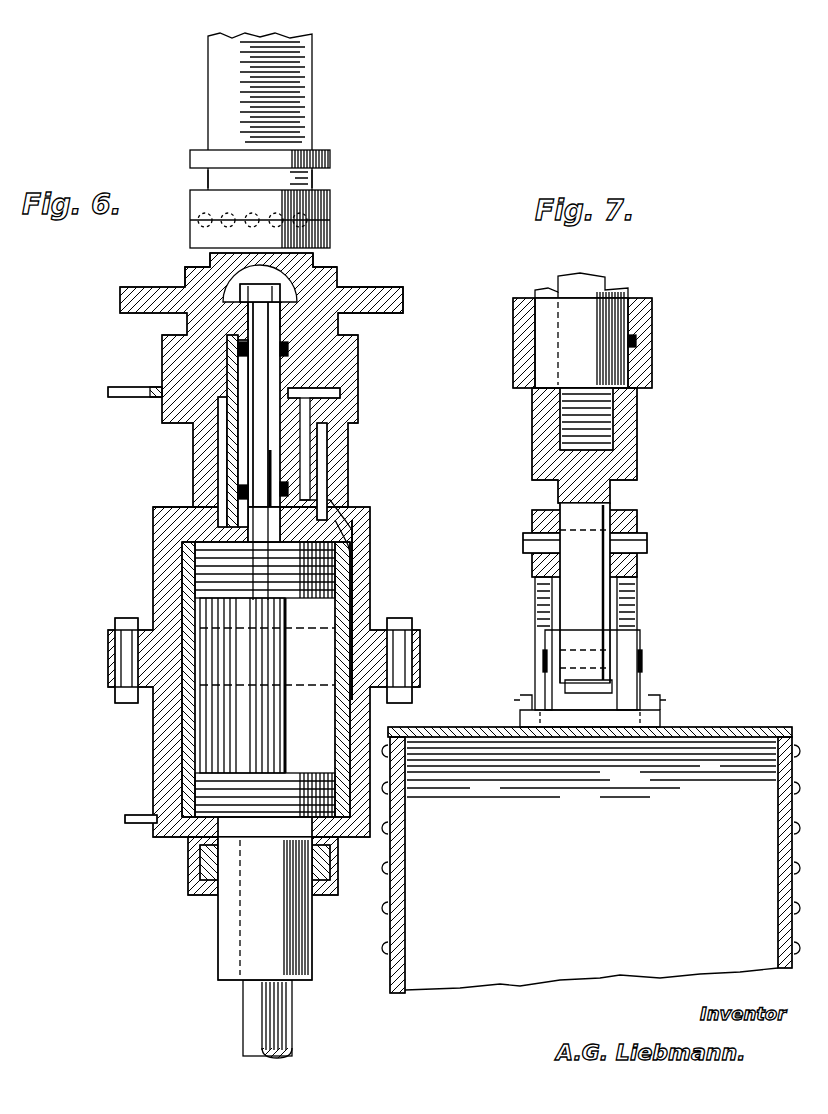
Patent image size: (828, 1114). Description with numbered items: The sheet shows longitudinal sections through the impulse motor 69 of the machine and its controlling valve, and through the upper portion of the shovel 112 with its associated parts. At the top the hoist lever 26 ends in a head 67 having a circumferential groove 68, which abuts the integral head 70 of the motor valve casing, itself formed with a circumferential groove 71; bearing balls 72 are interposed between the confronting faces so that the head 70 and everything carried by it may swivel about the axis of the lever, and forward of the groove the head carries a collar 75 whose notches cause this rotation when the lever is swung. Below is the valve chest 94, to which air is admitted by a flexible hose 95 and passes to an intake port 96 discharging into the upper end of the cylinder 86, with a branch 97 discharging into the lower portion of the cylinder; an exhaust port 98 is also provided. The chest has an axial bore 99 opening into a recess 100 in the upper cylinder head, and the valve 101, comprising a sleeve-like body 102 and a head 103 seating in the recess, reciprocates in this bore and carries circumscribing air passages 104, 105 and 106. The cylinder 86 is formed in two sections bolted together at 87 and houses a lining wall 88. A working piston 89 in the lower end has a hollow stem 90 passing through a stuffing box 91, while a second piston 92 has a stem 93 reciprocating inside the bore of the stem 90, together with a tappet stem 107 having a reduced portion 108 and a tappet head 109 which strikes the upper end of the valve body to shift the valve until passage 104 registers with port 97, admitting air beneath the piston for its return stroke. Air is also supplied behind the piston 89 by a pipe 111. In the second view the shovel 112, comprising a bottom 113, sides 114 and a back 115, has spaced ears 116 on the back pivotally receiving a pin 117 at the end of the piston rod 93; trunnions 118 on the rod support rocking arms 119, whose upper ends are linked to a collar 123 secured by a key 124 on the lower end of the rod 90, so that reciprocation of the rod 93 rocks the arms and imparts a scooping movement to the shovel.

In FIG. 6, the hoist lever 26 is at (282, 110).
In FIG. 6, the head 67 is at (312, 152).
In FIG. 6, the circumferential groove 68 is at (326, 178).
In FIG. 6, the head 70 is at (332, 228).
In FIG. 6, the bearing balls 72 is at (200, 205).
In FIG. 6, the valve chest 94 is at (352, 382).
In FIG. 6, the lining wall 88 is at (182, 735).
In FIG. 6, the cylinder 86 is at (362, 592).
In FIG. 6, the impulse motor 69 is at (372, 532).
In FIG. 6, the head 103 is at (332, 522).
In FIG. 6, the second piston 92 is at (340, 556).
In FIG. 6, the working piston 89 is at (290, 782).
In FIG. 6, the stem 93 is at (288, 668).
In FIG. 7, the stem 93 is at (610, 508).
In FIG. 6, the bolts 87 is at (414, 642).
In FIG. 6, the pipe 111 is at (135, 819).
In FIG. 6, the stuffing box 91 is at (340, 856).
In FIG. 6, the hollow stem 90 is at (296, 944).
In FIG. 7, the hollow stem 90 is at (612, 302).
In FIG. 6, the flexible hose 95 is at (128, 398).
In FIG. 6, the air passage 105 is at (222, 426).
In FIG. 6, the intake port 96 is at (232, 440).
In FIG. 6, the air passage 104 is at (240, 350).
In FIG. 6, the air passage 106 is at (240, 494).
In FIG. 6, the branch 97 is at (332, 444).
In FIG. 6, the bore 99 is at (290, 350).
In FIG. 6, the valve 101 is at (275, 382).
In FIG. 6, the tappet stem 107 is at (272, 318).
In FIG. 6, the reduced portion 108 is at (272, 482).
In FIG. 6, the exhaust port 98 is at (302, 500).
In FIG. 6, the recess 100 is at (160, 518).
In FIG. 6, the sleeve-like body 102 is at (186, 270).
In FIG. 6, the tappet head 109 is at (258, 286).
In FIG. 6, the circumferential groove 71 is at (326, 258).
In FIG. 6, the collar 75 is at (380, 292).
In FIG. 7, the collar 123 is at (652, 312).
In FIG. 7, the key 124 is at (652, 343).
In FIG. 7, the rocking arms 119 is at (640, 520).
In FIG. 7, the trunnions 118 is at (650, 540).
In FIG. 7, the ears 116 is at (626, 636).
In FIG. 7, the pin 117 is at (644, 656).
In FIG. 7, the back 115 is at (674, 724).
In FIG. 7, the shovel 112 is at (716, 765).
In FIG. 7, the sides 114 is at (404, 916).
In FIG. 7, the bottom 113 is at (646, 958).